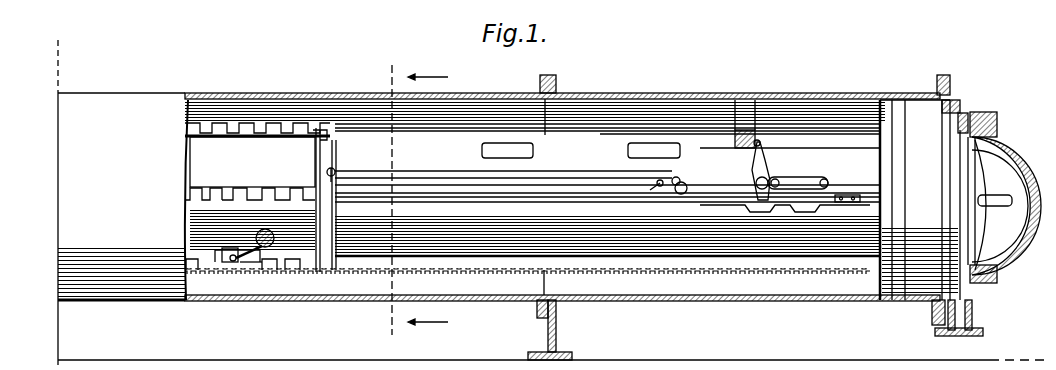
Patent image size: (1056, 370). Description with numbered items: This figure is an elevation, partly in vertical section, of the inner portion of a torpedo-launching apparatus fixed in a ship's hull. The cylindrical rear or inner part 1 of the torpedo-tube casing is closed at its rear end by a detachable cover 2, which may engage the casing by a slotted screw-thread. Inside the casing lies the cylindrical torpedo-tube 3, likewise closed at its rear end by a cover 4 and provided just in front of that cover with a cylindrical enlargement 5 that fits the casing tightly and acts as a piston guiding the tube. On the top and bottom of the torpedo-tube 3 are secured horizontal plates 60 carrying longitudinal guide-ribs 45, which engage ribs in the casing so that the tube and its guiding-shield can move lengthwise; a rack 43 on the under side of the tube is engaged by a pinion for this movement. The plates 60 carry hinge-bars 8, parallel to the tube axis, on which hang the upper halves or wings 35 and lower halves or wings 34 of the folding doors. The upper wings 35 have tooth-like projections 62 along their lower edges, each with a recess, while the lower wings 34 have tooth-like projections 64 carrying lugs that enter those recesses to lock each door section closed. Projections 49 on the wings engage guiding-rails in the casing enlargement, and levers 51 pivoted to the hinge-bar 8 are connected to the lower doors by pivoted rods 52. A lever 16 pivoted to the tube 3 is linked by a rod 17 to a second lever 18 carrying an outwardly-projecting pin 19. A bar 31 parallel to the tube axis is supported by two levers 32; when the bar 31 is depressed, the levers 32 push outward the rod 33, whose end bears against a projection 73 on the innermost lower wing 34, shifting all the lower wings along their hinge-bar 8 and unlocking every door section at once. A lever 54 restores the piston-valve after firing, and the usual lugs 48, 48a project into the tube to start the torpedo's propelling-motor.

The rear or inner part of the torpedo-tube casing 1 is at (672, 88).
The detachable cover 2 is at (1021, 152).
The torpedo-tube 3 is at (607, 235).
The cover 4 is at (996, 222).
The cylindrical enlargement 5 is at (755, 217).
The hinge-bars 8 is at (268, 124).
The lever 16 is at (345, 176).
The rod 17 is at (602, 176).
The lever 18 is at (682, 181).
The outwardly-projecting pin 19 is at (661, 191).
The bar 31 is at (823, 178).
The levers 32 is at (776, 183).
The rod 33 is at (547, 200).
The lower halves or wings 34 is at (252, 229).
The upper halves or wings 35 is at (263, 203).
The rack 43 is at (651, 265).
The longitudinal guide-ribs 45 is at (437, 132).
The lug 48 is at (740, 149).
The lug 48a is at (528, 153).
The projections 49 is at (322, 128).
The levers 51 is at (232, 264).
The pivoted rods 52 is at (262, 268).
The lever 54 is at (770, 101).
The horizontal plates 60 is at (732, 99).
The tooth-like projections 62 is at (290, 196).
The tooth-like projections 64 is at (226, 196).
The projection 73 is at (306, 205).